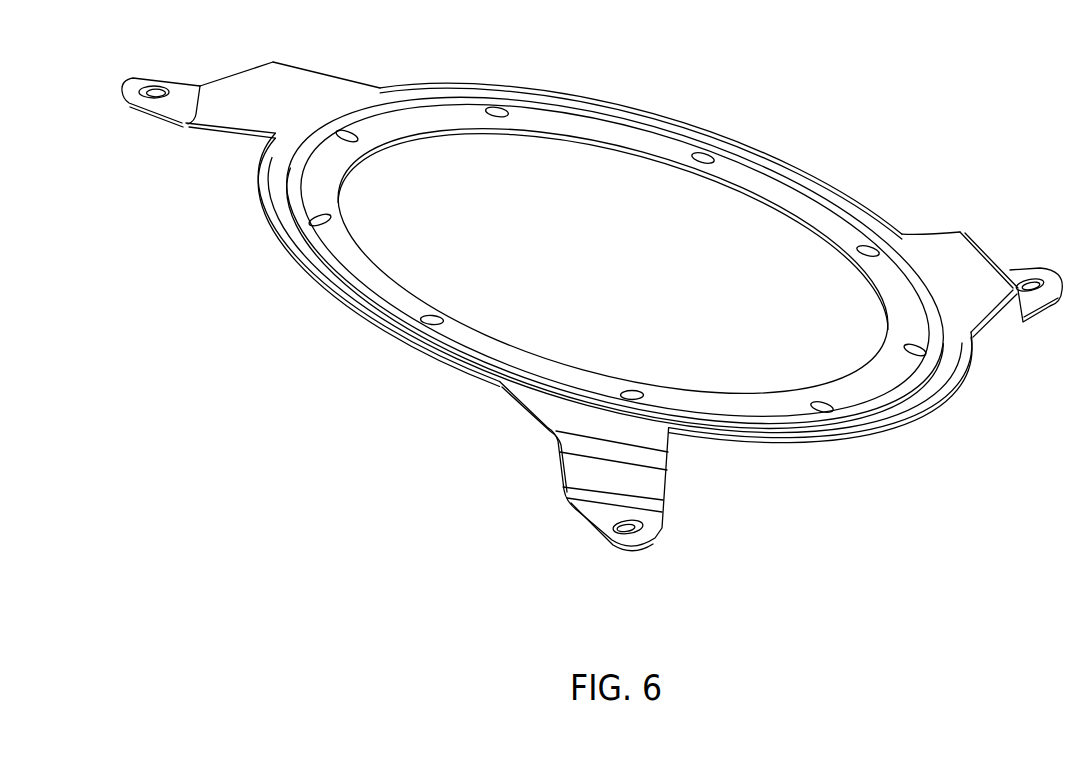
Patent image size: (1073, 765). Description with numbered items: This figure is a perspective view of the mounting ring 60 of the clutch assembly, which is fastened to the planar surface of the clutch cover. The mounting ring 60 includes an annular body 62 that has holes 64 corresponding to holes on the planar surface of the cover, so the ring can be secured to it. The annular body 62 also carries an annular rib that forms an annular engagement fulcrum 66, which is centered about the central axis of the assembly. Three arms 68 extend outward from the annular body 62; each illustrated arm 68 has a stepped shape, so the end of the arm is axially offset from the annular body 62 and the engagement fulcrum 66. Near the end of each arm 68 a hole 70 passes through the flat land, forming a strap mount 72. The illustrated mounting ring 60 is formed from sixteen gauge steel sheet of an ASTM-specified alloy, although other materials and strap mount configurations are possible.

The mounting ring 60 is at (358, 310).
The annular body 62 is at (495, 337).
The holes 64 is at (703, 163).
The annular engagement fulcrum 66 is at (950, 362).
The arms 68 is at (927, 233).
The hole 70 is at (154, 86).
The strap mount 72 is at (130, 106).